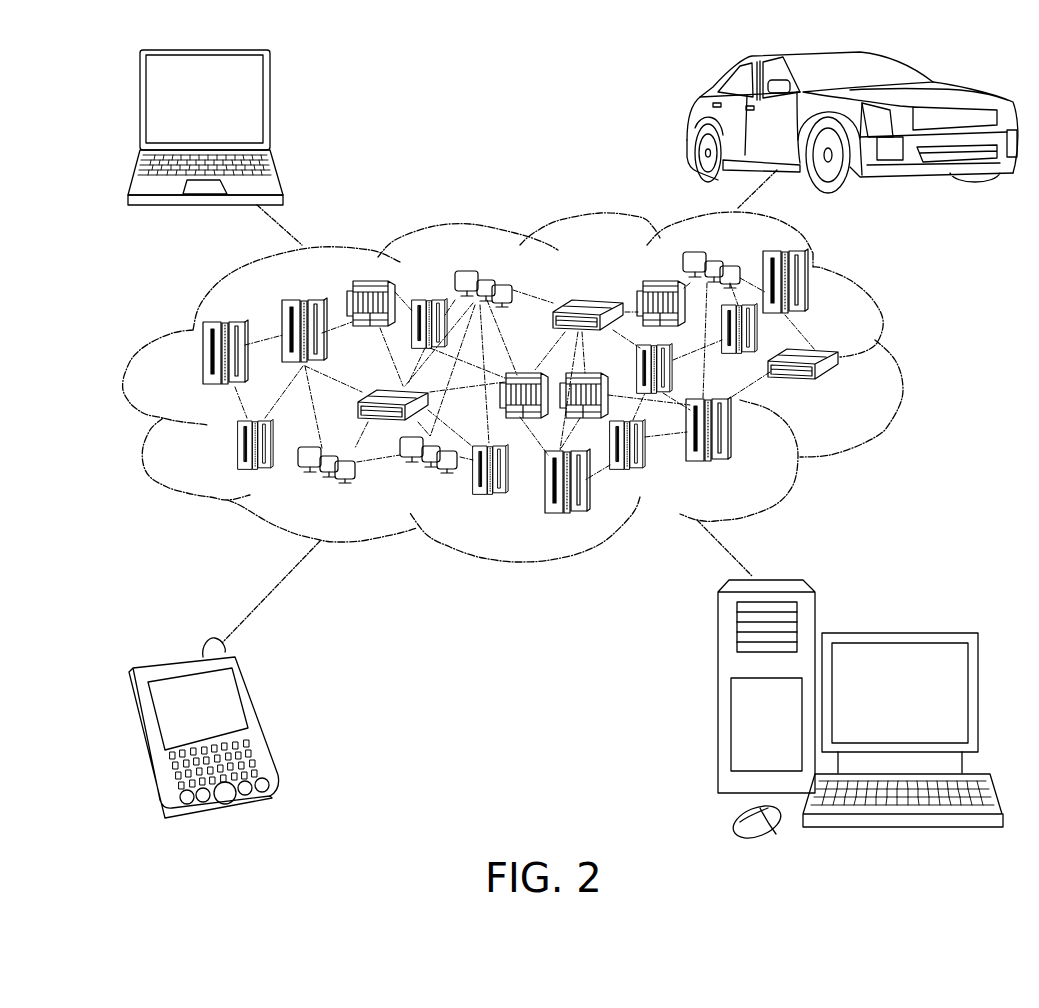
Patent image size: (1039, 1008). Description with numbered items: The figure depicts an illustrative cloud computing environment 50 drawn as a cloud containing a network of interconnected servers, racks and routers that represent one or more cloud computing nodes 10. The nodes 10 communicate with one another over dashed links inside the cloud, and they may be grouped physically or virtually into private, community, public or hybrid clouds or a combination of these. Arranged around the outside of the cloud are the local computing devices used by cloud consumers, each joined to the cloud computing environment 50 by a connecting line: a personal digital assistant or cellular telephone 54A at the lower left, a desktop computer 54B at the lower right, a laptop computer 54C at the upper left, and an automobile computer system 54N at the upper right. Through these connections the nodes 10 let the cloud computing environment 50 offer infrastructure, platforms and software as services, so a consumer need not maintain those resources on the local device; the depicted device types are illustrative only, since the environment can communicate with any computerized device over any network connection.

The cloud computing node 10 is at (842, 388).
The cloud computing environment 50 is at (895, 361).
The personal digital assistant (PDA) or cellular telephone 54A is at (260, 720).
The desktop computer 54B is at (900, 633).
The laptop computer 54C is at (270, 108).
The automobile computer system 54N is at (690, 122).